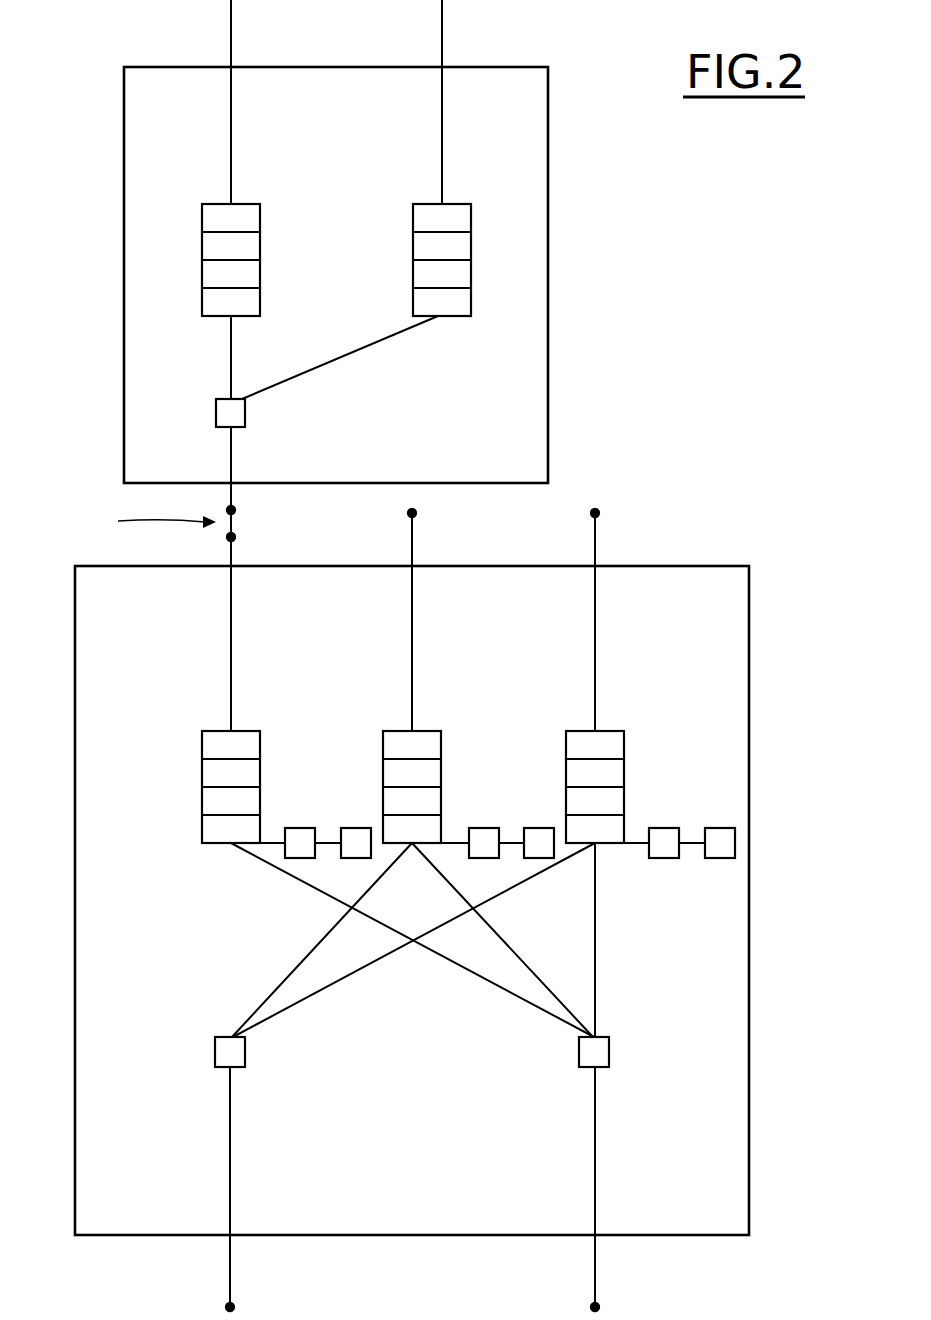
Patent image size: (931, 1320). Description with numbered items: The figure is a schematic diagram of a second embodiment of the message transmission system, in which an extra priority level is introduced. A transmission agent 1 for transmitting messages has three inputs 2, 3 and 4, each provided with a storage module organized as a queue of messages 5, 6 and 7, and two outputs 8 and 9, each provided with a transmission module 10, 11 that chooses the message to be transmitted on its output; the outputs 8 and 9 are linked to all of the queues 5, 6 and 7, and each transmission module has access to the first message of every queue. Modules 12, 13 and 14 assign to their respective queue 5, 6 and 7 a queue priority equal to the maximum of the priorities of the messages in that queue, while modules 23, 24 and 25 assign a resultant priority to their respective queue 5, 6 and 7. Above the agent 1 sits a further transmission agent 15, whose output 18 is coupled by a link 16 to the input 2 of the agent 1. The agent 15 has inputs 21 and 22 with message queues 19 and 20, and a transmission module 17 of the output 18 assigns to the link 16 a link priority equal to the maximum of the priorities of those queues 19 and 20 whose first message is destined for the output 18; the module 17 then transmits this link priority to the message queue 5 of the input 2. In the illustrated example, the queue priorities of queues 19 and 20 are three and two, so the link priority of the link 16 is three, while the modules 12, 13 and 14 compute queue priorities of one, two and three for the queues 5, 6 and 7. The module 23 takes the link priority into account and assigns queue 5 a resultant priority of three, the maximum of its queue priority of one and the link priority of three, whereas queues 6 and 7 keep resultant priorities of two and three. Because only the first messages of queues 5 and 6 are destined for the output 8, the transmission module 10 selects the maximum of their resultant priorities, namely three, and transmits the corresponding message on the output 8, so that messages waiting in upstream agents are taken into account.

The transmission agent 1 is at (749, 896).
The input 2 is at (231, 547).
The input 3 is at (412, 547).
The input 4 is at (595, 547).
The queue of messages 5 is at (252, 718).
The queue of messages 6 is at (434, 718).
The queue of messages 7 is at (616, 718).
The output 8 is at (230, 1284).
The output 9 is at (595, 1284).
The transmission module 10 is at (245, 1050).
The transmission module 11 is at (609, 1050).
The module for assigning a queue priority 12 is at (298, 827).
The module for assigning a queue priority 13 is at (482, 827).
The module for assigning a queue priority 14 is at (662, 827).
The transmission agent 15 is at (548, 272).
The link 16 is at (151, 521).
The transmission module 17 is at (245, 410).
The output 18 is at (231, 500).
The message queue 19 is at (250, 180).
The message queue 20 is at (462, 180).
The input 21 is at (231, 20).
The input 22 is at (442, 20).
The module for assigning a resultant priority 23 is at (354, 827).
The module for assigning a resultant priority 24 is at (537, 827).
The module for assigning a resultant priority 25 is at (718, 827).